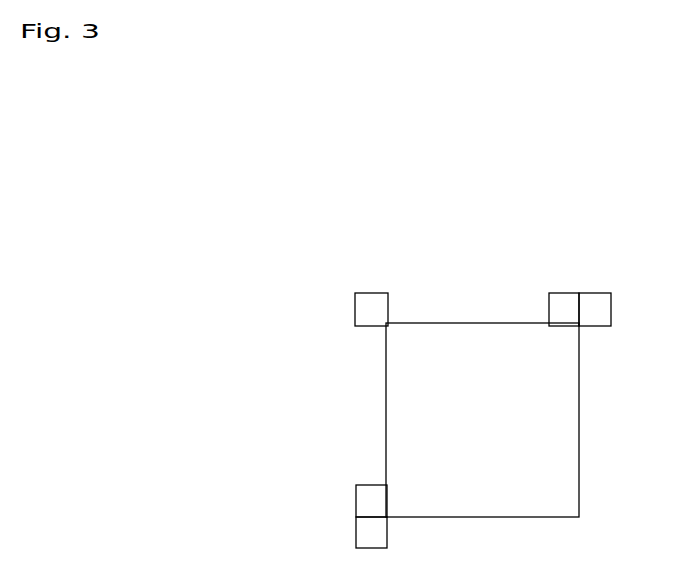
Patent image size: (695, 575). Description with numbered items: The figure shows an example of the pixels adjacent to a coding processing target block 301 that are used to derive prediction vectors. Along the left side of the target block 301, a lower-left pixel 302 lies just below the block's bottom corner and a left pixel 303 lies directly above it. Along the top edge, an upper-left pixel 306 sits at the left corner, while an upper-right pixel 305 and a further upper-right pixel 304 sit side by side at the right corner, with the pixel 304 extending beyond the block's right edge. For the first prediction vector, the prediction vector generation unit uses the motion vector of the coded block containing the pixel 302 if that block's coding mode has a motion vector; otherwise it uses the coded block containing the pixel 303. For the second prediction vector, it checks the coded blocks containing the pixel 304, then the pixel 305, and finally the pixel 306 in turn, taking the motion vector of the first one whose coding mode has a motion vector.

The coding processing target block 301 is at (580, 420).
The pixel A0 302 is at (355, 533).
The pixel A1 303 is at (355, 502).
The pixel B0 304 is at (595, 293).
The pixel B1 305 is at (563, 293).
The pixel B2 306 is at (372, 293).